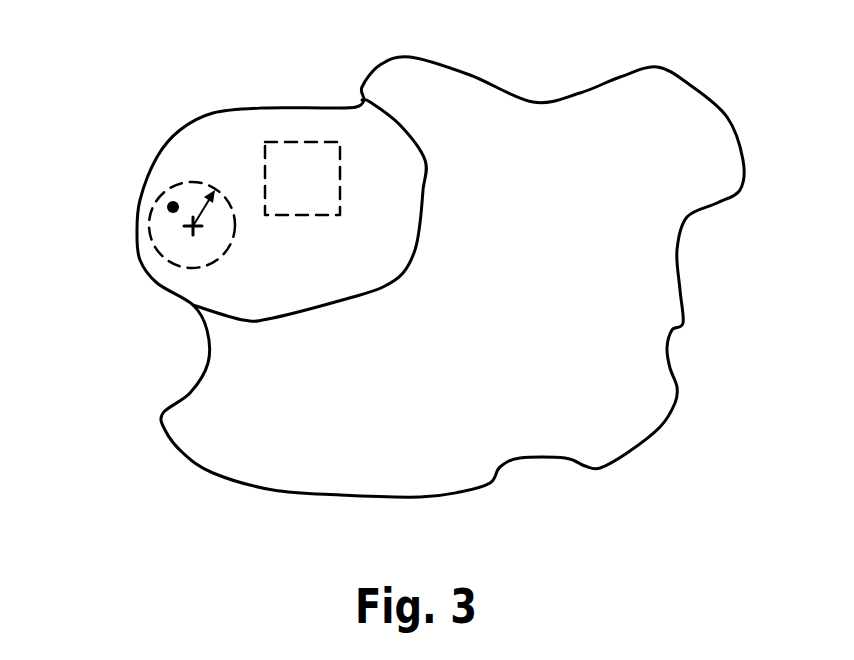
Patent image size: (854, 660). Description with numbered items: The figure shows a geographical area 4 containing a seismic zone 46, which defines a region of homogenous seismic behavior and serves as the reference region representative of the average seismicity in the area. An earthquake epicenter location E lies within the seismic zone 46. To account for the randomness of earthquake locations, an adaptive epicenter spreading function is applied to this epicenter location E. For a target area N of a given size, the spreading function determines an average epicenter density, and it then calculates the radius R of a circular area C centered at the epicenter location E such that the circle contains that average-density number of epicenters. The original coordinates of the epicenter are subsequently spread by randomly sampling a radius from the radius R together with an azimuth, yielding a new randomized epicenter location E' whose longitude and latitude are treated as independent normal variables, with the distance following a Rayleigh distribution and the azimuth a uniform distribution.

The geographic area 4 is at (158, 356).
The seismic zone 46 is at (215, 133).
The target area N is at (300, 147).
The circular area C is at (150, 222).
The epicenter location E is at (144, 249).
The randomized epicenter location E' is at (140, 145).
The radius R is at (210, 217).